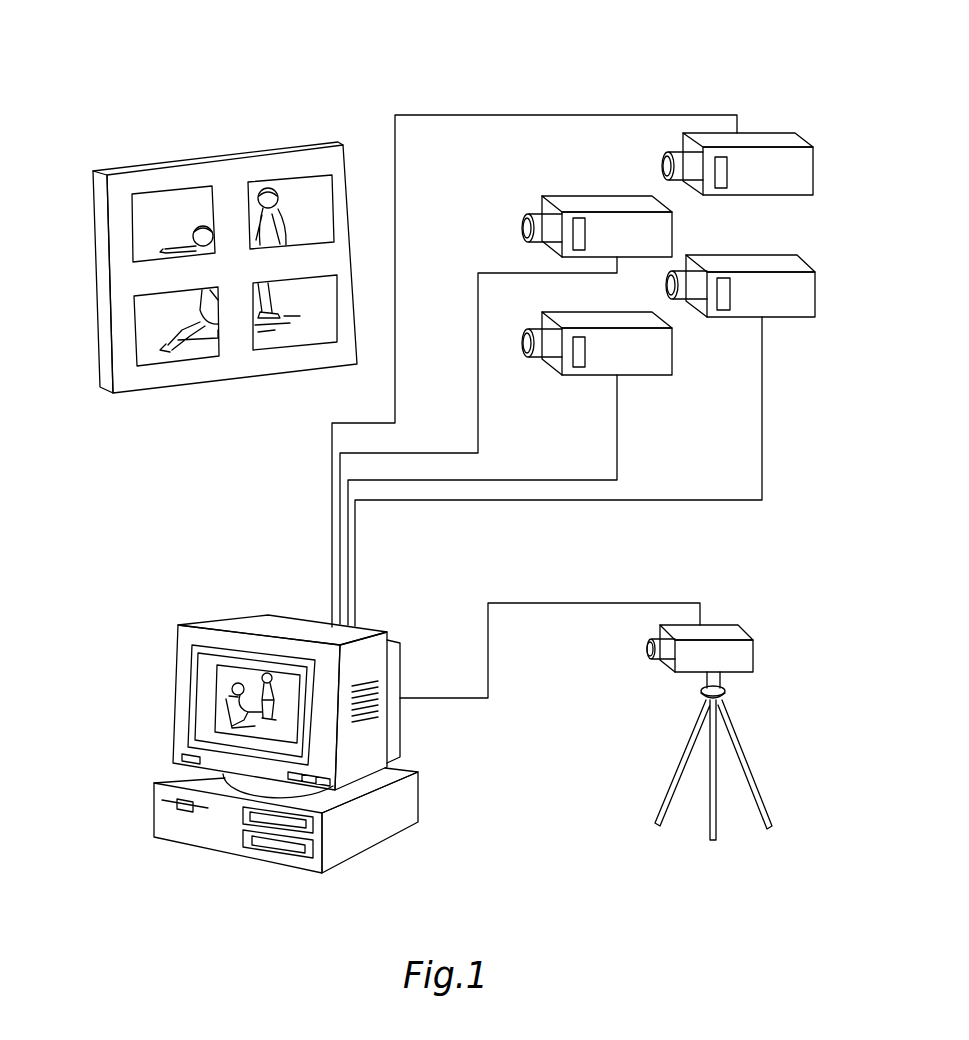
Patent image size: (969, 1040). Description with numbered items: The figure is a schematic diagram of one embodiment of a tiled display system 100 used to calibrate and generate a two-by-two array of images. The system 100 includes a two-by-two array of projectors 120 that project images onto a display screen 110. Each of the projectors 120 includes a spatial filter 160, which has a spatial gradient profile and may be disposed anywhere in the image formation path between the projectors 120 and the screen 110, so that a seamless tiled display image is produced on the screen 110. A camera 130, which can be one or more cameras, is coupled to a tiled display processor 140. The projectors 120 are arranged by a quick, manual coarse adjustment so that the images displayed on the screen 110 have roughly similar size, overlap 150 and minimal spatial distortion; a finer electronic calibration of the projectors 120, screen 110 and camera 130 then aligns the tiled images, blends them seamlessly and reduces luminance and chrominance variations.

The tiled display system 100 is at (772, 35).
The display screen 110 is at (135, 162).
The projectors 120 is at (806, 142).
The camera 130 is at (729, 627).
The tiled display processor 140 is at (153, 803).
The overlap 150 is at (228, 185).
The spatial filter 160 is at (718, 157).